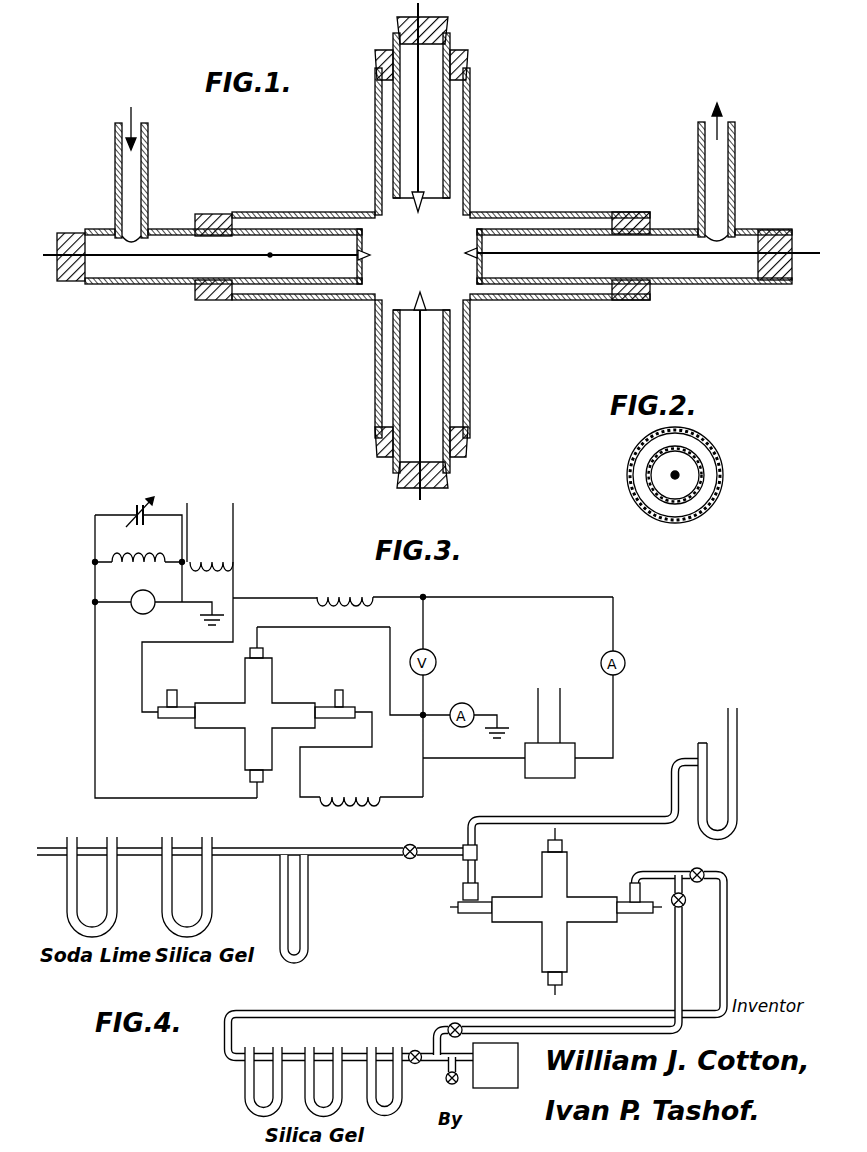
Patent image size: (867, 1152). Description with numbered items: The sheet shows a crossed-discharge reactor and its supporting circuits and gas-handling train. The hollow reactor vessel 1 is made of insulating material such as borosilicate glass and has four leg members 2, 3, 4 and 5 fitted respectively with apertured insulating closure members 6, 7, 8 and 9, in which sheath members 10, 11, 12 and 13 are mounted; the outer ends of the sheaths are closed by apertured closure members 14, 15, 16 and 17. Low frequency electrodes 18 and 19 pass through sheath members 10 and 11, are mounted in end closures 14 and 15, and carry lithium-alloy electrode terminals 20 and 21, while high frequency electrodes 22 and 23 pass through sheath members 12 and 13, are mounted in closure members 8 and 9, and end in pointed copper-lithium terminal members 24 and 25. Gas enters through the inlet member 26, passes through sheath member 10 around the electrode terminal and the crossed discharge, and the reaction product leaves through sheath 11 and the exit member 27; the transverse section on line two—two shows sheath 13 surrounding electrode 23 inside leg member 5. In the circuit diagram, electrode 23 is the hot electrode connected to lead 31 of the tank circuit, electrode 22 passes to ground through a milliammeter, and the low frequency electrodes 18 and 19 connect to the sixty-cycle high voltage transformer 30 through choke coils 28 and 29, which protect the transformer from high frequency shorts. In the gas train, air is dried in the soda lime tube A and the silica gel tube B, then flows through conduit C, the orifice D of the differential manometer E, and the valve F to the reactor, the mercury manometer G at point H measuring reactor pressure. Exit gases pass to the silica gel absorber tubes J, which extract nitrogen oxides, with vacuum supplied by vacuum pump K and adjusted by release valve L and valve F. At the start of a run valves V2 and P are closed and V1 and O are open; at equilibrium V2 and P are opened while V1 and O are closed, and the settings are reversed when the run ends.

In FIG. 1, the hollow reactor vessel 1 is at (285, 212).
In FIG. 1, the leg member 2 is at (253, 190).
In FIG. 1, the leg member 3 is at (540, 210).
In FIG. 1, the leg member 4 is at (470, 113).
In FIG. 1, the leg member 5 is at (376, 383).
In FIG. 2, the leg member 5 is at (721, 470).
In FIG. 1, the apertured insulating closure member 6 is at (205, 301).
In FIG. 1, the apertured insulating closure member 7 is at (636, 210).
In FIG. 1, the apertured insulating closure member 8 is at (470, 58).
In FIG. 1, the apertured insulating closure member 9 is at (468, 441).
In FIG. 1, the sheath member 10 is at (142, 286).
In FIG. 1, the sheath member 11 is at (686, 286).
In FIG. 1, the sheath member 12 is at (394, 97).
In FIG. 1, the sheath member 13 is at (452, 382).
In FIG. 2, the sheath member 13 is at (648, 476).
In FIG. 1, the apertured closure member 14 is at (62, 288).
In FIG. 1, the apertured closure member 15 is at (782, 282).
In FIG. 1, the apertured closure member 16 is at (397, 28).
In FIG. 1, the apertured closure member 17 is at (400, 481).
In FIG. 1, the low frequency electrode 18 is at (286, 260).
In FIG. 3, the low frequency electrode 18 is at (154, 720).
In FIG. 1, the low frequency electrode 19 is at (594, 258).
In FIG. 3, the low frequency electrode 19 is at (366, 692).
In FIG. 1, the alloy electrode terminal 20 is at (398, 255).
In FIG. 1, the alloy electrode terminal 21 is at (444, 254).
In FIG. 1, the high frequency electrode 22 is at (418, 135).
In FIG. 3, the high frequency electrode 22 is at (285, 630).
In FIG. 1, the high frequency electrode 23 is at (418, 398).
In FIG. 2, the high frequency electrode 23 is at (675, 479).
In FIG. 3, the high frequency electrode 23 is at (250, 788).
In FIG. 1, the copper-lithium alloy terminal member 24 is at (413, 205).
In FIG. 1, the copper-lithium alloy terminal member 25 is at (428, 280).
In FIG. 1, the inlet member 26 is at (115, 165).
In FIG. 3, the inlet member 26 is at (180, 690).
In FIG. 1, the exit member 27 is at (735, 157).
In FIG. 3, the exit member 27 is at (334, 690).
In FIG. 3, the choke coil 28 is at (316, 588).
In FIG. 3, the choke coil 29 is at (372, 795).
In FIG. 3, the high voltage transformer 30 is at (528, 757).
In FIG. 3, the lead 31 is at (95, 722).
In FIG. 4, the soda lime tube A is at (118, 896).
In FIG. 4, the silica gel tube B is at (212, 898).
In FIG. 4, the conduit C is at (240, 848).
In FIG. 4, the orifice D is at (292, 848).
In FIG. 4, the differential manometer E is at (309, 896).
In FIG. 4, the valve F is at (406, 858).
In FIG. 4, the mercury manometer G is at (737, 772).
In FIG. 4, the point H is at (478, 852).
In FIG. 4, the silica gel absorber tube J is at (365, 1043).
In FIG. 4, the vacuum pump K is at (490, 1082).
In FIG. 4, the release valve L is at (446, 1080).
In FIG. 4, the valve O is at (460, 1022).
In FIG. 4, the valve P is at (418, 1048).
In FIG. 4, the valve V1 is at (686, 906).
In FIG. 4, the valve V2 is at (693, 868).